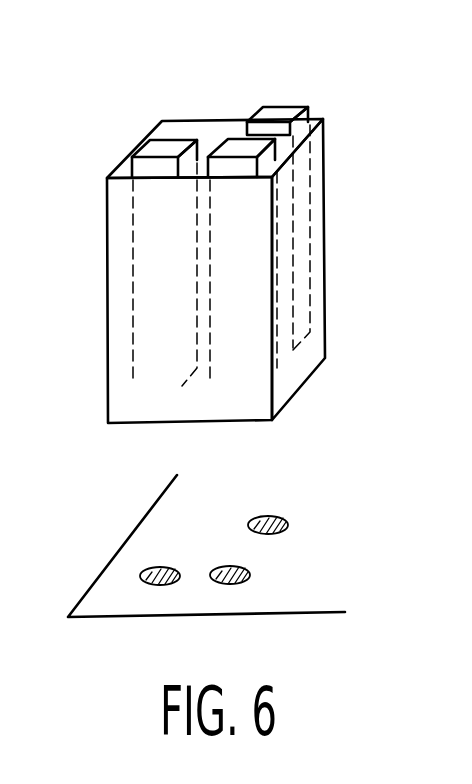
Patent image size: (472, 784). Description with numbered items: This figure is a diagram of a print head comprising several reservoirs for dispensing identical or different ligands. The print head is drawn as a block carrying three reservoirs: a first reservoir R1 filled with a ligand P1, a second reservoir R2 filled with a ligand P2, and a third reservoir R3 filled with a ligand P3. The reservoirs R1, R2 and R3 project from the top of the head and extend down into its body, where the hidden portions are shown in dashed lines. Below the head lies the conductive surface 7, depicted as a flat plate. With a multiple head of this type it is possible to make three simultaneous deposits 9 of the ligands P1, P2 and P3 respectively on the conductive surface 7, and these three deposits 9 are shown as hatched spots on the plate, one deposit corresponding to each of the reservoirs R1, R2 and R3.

The first reservoir R1 is at (150, 148).
The second reservoir R2 is at (232, 145).
The third reservoir R3 is at (275, 110).
The ligand P1 is at (147, 262).
The ligand P2 is at (243, 370).
The ligand P3 is at (305, 227).
The conductive surface 7 is at (157, 531).
The deposits 9 is at (172, 568).